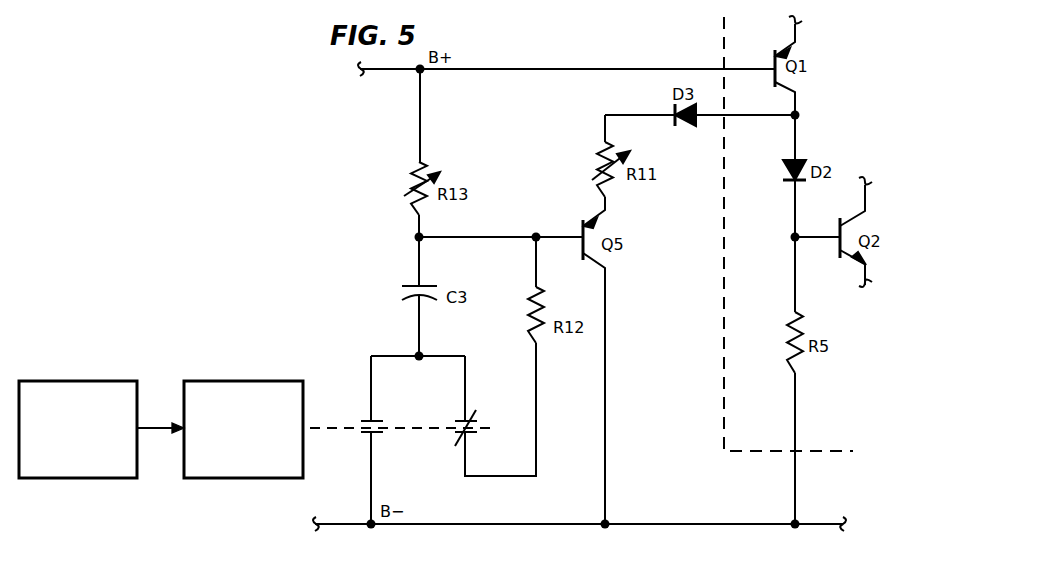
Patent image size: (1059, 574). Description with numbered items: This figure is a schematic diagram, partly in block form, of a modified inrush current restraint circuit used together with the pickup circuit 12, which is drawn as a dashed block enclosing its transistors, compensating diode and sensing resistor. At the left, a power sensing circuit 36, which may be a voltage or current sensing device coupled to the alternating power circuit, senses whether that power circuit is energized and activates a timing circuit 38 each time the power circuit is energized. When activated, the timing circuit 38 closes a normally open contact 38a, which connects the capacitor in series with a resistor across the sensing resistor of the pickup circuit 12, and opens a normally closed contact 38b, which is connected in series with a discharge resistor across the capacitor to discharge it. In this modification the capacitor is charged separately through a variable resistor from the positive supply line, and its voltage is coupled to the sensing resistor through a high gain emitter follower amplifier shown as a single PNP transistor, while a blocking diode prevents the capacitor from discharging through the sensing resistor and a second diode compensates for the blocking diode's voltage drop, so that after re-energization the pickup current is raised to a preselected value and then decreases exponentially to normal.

The pickup circuit 12 is at (723, 376).
The power sensing circuit 36 is at (69, 381).
The timing circuit 38 is at (231, 381).
The normally open contact 38a is at (384, 438).
The normally closed contact 38b is at (479, 432).